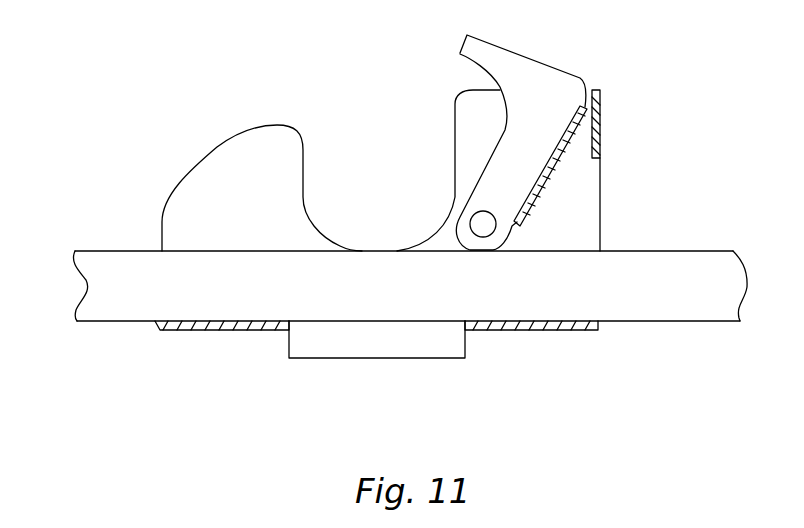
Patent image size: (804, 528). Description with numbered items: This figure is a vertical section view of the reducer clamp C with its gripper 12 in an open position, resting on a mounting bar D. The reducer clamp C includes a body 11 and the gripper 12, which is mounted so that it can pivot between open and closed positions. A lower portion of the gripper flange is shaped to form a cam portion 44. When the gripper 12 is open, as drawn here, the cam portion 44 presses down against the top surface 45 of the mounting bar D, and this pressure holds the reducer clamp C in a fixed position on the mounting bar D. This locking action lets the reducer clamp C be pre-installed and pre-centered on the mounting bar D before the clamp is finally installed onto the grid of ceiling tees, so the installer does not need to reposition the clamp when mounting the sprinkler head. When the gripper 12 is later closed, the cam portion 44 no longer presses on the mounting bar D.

The body 11 is at (243, 133).
The gripper 12 is at (530, 57).
The cam portion 44 is at (480, 250).
The top surface 45 is at (555, 249).
The reducer clamp C is at (377, 103).
The mounting bar D is at (128, 300).